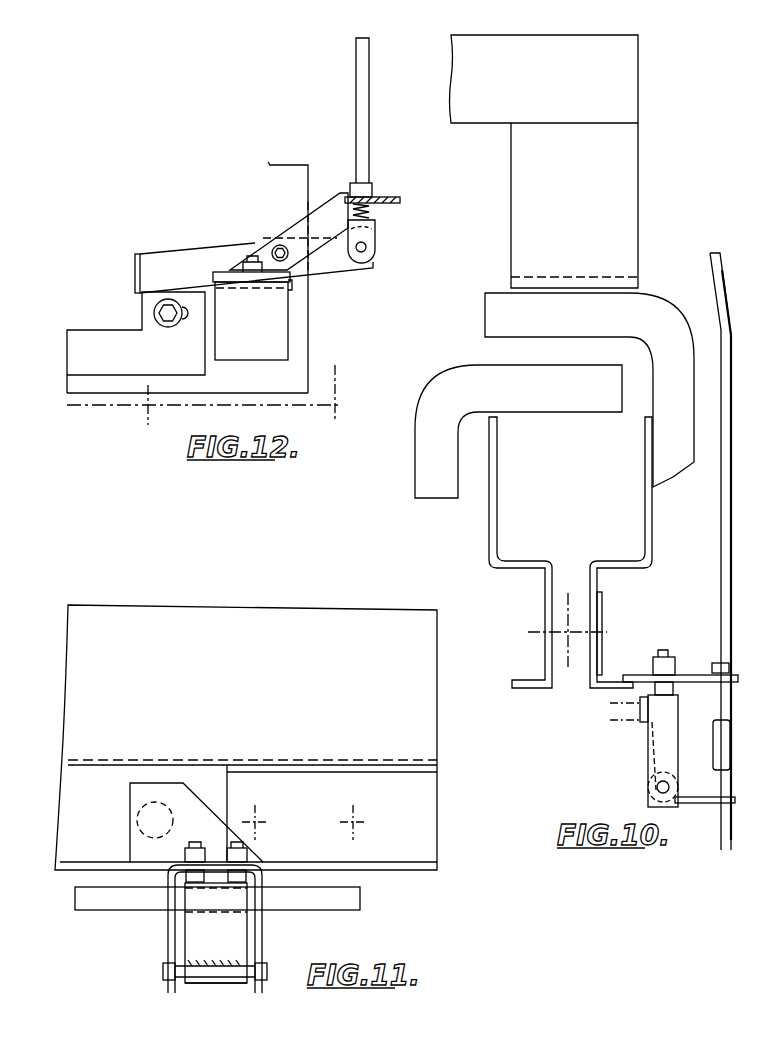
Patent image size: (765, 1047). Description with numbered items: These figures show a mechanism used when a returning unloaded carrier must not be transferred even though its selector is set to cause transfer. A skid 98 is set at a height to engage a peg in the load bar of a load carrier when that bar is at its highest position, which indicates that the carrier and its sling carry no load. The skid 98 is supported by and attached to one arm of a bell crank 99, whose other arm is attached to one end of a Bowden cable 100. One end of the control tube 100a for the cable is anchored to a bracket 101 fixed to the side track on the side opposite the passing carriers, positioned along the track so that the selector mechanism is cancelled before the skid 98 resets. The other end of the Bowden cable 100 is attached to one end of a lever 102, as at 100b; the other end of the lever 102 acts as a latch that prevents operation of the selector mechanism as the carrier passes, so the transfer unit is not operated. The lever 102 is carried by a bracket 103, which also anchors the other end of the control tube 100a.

In FIG. 11, the skid 98 is at (133, 912).
In FIG. 10, the bell crank 99 is at (655, 762).
In FIG. 11, the bell crank 99 is at (185, 935).
In FIG. 10, the Bowden cable 100 is at (718, 660).
In FIG. 12, the control tube 100a is at (358, 108).
In FIG. 12, the attachment of Bowden cable to lever 100b is at (376, 227).
In FIG. 10, the bracket 101 is at (707, 673).
In FIG. 12, the lever 102 is at (333, 268).
In FIG. 12, the bracket 103 is at (300, 222).